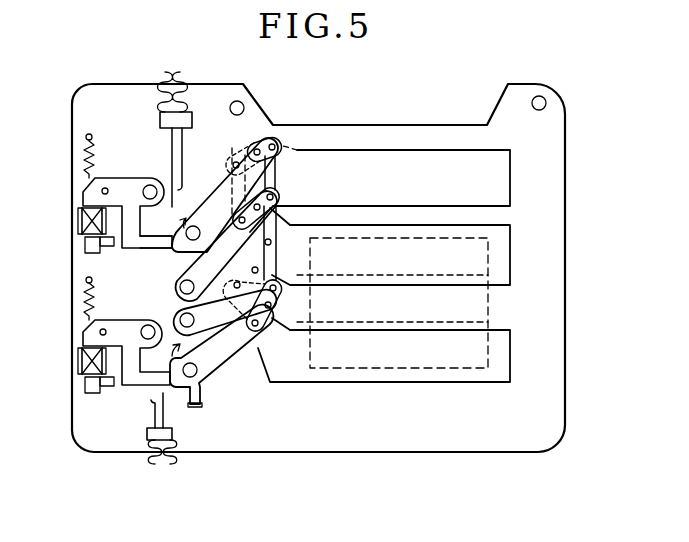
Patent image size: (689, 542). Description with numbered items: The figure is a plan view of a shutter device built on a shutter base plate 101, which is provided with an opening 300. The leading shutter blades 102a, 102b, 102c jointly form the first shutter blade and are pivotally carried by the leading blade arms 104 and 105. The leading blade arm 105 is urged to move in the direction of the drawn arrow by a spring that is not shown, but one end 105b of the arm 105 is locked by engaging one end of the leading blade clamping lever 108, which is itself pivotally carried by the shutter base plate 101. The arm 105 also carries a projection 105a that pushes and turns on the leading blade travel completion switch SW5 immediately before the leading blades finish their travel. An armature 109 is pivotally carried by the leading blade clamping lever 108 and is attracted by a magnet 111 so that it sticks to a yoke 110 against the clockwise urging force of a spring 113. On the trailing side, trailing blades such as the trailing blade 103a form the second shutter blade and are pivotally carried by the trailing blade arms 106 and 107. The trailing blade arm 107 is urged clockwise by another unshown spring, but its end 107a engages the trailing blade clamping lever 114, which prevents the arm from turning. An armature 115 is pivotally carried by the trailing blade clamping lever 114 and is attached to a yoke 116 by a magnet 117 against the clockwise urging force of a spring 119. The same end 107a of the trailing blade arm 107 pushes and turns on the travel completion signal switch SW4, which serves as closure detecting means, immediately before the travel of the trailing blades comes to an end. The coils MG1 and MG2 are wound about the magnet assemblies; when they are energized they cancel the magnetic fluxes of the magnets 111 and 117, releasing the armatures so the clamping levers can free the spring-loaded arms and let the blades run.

The shutter base plate 101 is at (555, 123).
The leading shutter blade 102a is at (503, 243).
The leading shutter blade 102b is at (503, 300).
The leading shutter blade 102c is at (503, 352).
The trailing blade 103a is at (400, 158).
The leading blade arm 104 is at (257, 348).
The leading blade arm 105 is at (215, 367).
The projection 105a is at (200, 408).
The end of the leading blade arm 105b is at (150, 412).
The trailing blade arm 106 is at (222, 193).
The trailing blade arm 107 is at (215, 188).
The end of the trailing blade arm 107a is at (153, 255).
The leading blade clamping lever 108 is at (133, 395).
The armature 109 is at (92, 337).
The yoke 110 is at (100, 410).
The magnet 111 is at (88, 387).
The spring 113 is at (85, 297).
The trailing blade clamping lever 114 is at (137, 187).
The armature 115 is at (92, 197).
The yoke 116 is at (100, 255).
The magnet 117 is at (88, 245).
The spring 119 is at (85, 157).
The opening 300 is at (410, 370).
The coil MG1 is at (80, 360).
The coil MG2 is at (80, 220).
The travel completion signal switch SW4 is at (160, 120).
The leading blade travel completion switch SW5 is at (175, 440).